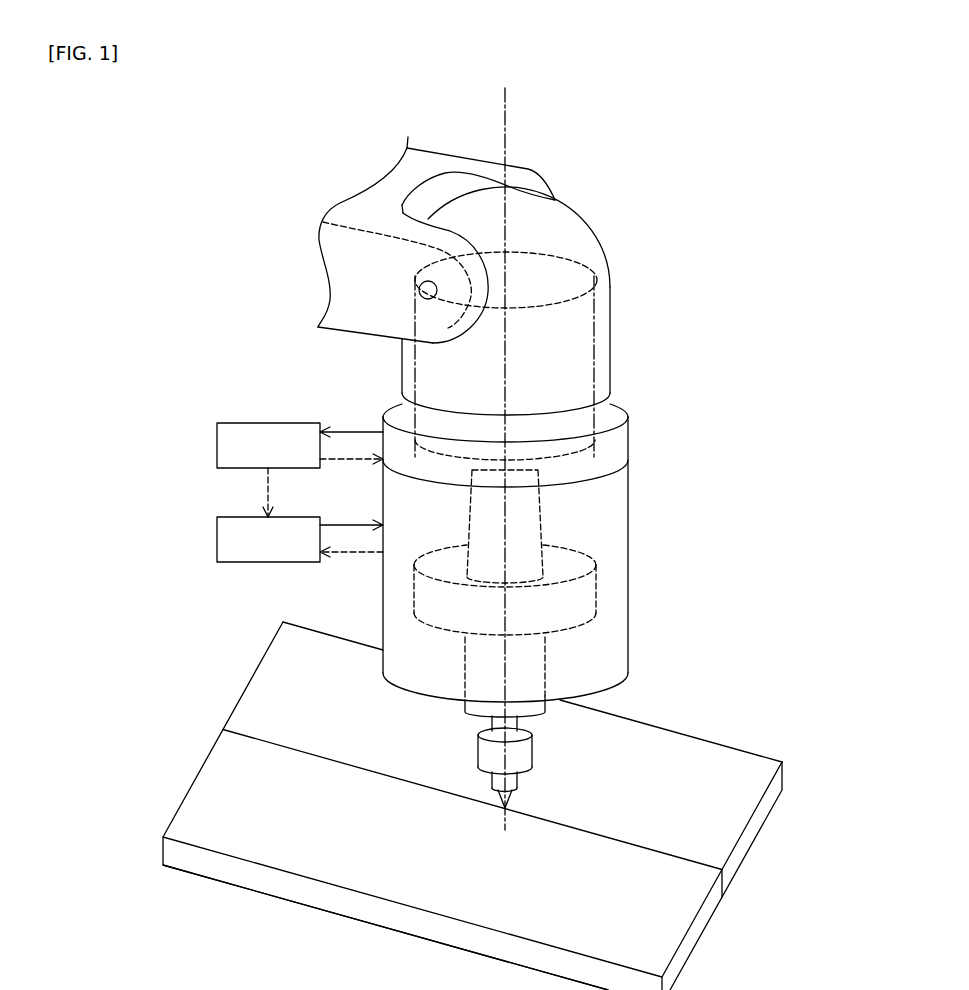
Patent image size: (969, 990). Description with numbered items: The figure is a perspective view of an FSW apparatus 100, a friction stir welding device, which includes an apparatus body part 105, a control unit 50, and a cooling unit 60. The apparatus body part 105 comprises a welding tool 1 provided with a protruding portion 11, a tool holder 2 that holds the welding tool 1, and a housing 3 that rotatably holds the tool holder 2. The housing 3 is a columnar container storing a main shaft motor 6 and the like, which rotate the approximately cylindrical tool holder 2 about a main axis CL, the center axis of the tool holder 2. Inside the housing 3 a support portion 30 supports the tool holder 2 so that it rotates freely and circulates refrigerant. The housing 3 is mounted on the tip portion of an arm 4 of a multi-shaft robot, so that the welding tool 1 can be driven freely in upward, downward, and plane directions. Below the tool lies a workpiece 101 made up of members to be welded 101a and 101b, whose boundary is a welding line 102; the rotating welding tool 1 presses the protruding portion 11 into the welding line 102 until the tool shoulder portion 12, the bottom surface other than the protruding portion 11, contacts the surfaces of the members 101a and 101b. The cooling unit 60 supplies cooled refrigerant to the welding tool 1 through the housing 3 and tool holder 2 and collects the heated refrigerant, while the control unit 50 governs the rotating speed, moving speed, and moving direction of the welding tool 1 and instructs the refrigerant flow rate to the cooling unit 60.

The FSW apparatus 100 is at (692, 310).
The main axis CL is at (508, 145).
The arm 4 is at (380, 307).
The apparatus body part 105 is at (578, 240).
The main shaft motor 6 is at (578, 362).
The housing 3 is at (617, 580).
The support portion 30 is at (583, 607).
The tool holder 2 is at (525, 710).
The welding tool 1 is at (508, 777).
The protruding portion 11 is at (510, 803).
The tool shoulder portion 12 is at (497, 788).
The control unit 50 is at (235, 422).
The cooling unit 60 is at (235, 517).
The workpiece 101 is at (840, 852).
The member to be welded 101a is at (710, 820).
The member to be welded 101b is at (662, 905).
The welding line 102 is at (330, 757).